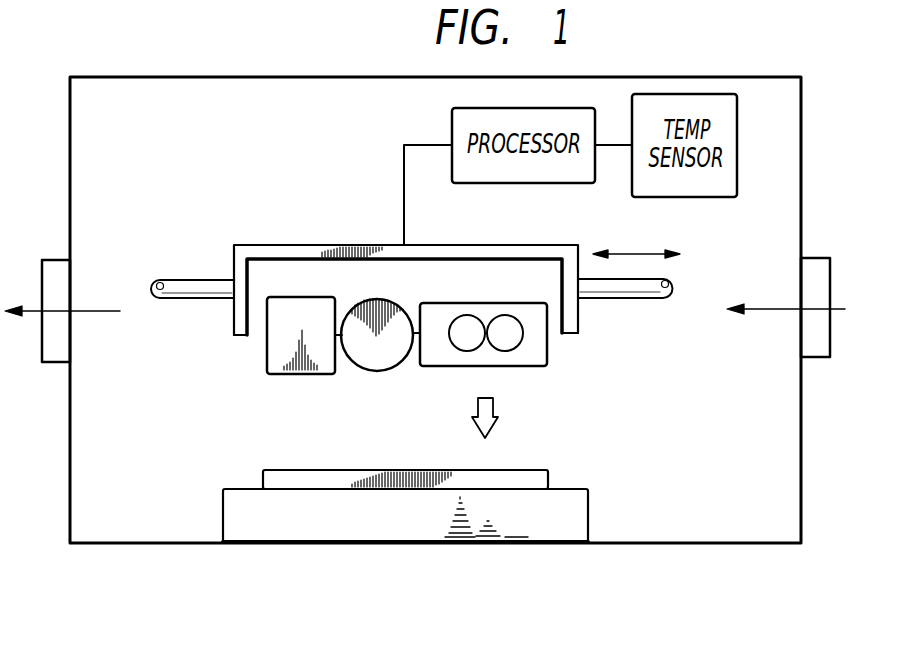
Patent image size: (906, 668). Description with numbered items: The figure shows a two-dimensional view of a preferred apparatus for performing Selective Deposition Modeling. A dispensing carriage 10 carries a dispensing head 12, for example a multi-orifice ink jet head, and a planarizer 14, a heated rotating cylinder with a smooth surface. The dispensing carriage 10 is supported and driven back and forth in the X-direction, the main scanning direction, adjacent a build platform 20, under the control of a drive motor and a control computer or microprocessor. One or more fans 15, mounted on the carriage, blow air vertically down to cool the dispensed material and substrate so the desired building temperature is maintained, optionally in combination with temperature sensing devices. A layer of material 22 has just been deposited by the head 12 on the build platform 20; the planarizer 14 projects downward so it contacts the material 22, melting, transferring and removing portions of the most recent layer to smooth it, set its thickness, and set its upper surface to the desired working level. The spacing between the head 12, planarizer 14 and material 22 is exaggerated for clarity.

The dispensing carriage 10 is at (477, 244).
The dispensing head 12 is at (300, 374).
The planarizer 14 is at (378, 372).
The fans 15 is at (543, 366).
The build platform 20 is at (525, 542).
The layer of material 22 is at (550, 480).